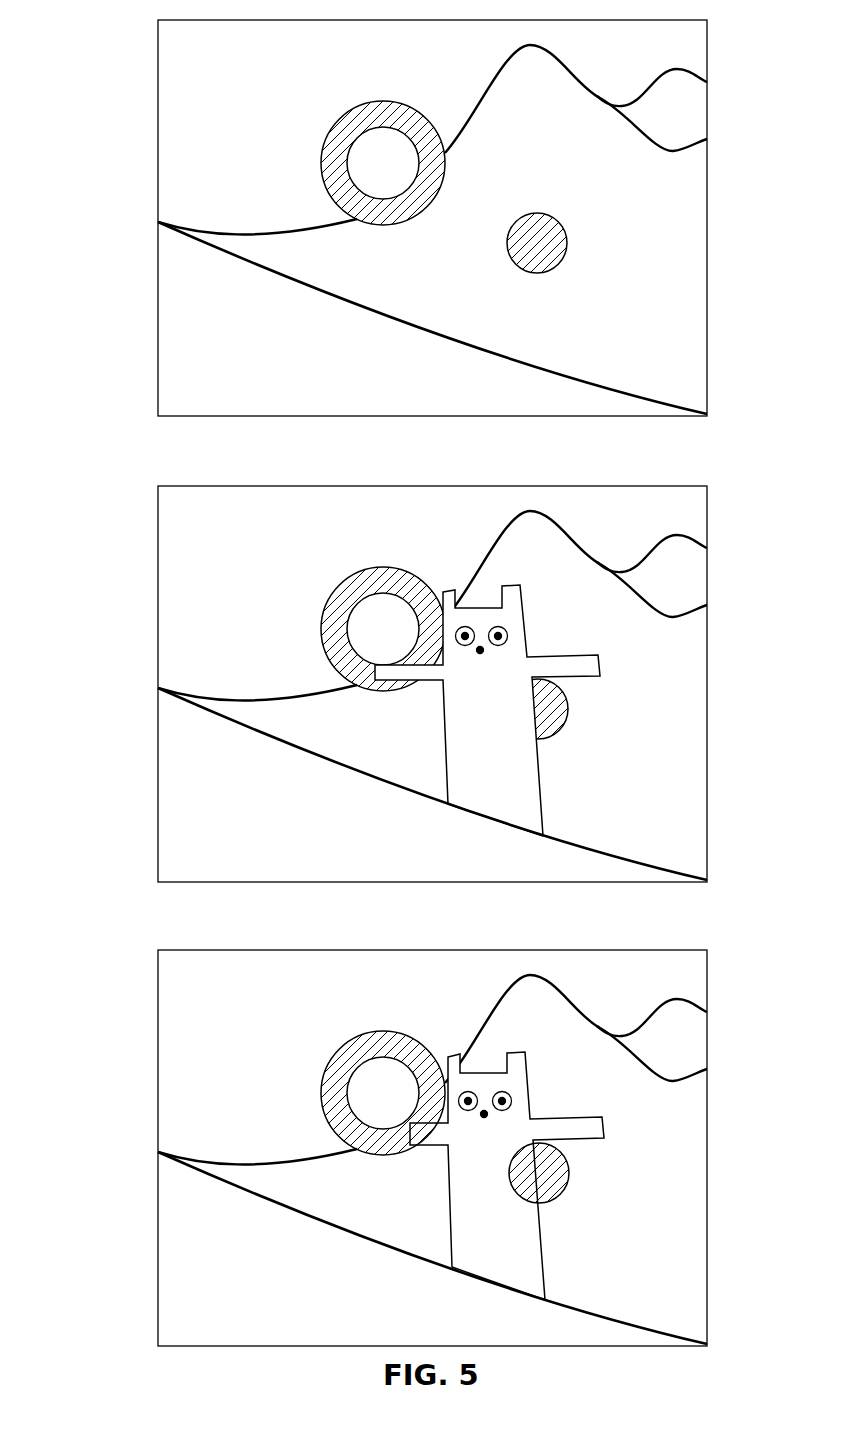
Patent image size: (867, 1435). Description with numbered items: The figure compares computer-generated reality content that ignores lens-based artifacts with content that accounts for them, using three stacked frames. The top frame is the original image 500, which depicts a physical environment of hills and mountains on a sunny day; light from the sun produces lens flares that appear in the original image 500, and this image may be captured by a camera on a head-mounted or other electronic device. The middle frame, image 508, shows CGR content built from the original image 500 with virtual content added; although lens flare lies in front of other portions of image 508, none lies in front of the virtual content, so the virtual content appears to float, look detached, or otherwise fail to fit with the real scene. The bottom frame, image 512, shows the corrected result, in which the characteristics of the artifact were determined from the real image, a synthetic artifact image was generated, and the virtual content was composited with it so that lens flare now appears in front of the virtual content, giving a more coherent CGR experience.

The original image 500 is at (415, 215).
The image 508 is at (415, 681).
The image 512 is at (416, 1145).